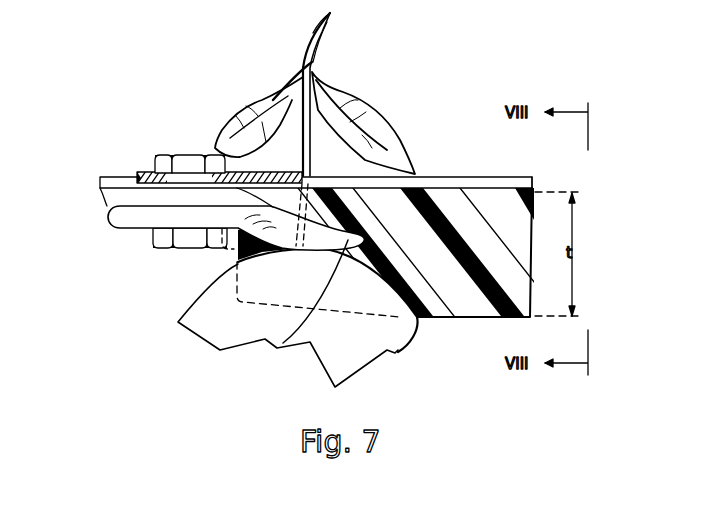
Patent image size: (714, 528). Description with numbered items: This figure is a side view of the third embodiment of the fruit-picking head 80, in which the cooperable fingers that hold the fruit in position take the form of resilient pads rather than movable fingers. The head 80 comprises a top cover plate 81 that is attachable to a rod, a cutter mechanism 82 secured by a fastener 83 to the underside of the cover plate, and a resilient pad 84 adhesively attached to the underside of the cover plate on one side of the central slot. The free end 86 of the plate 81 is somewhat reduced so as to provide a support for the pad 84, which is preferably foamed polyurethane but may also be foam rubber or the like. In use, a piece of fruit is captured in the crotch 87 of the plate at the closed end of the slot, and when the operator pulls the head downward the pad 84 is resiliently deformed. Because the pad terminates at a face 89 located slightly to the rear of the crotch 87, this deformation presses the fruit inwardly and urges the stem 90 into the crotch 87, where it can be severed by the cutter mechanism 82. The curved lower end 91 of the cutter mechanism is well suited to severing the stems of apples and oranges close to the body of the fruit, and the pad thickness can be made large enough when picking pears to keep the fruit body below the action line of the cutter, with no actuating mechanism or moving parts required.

The head 80 is at (207, 125).
The top cover plate 81 is at (474, 181).
The cutter mechanism 82 is at (116, 219).
The fastener 83 is at (156, 160).
The resilient pad 84 is at (482, 303).
The free end of the plate 86 is at (535, 183).
The crotch 87 is at (313, 176).
The face 89 is at (235, 280).
The stem 90 is at (320, 43).
The curved lower end of the cutter mechanism 91 is at (283, 343).